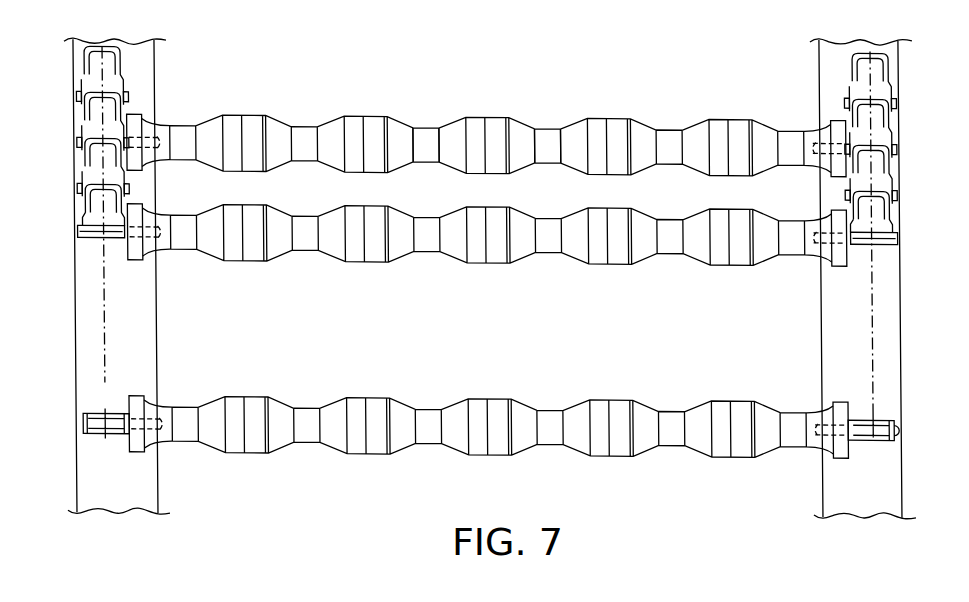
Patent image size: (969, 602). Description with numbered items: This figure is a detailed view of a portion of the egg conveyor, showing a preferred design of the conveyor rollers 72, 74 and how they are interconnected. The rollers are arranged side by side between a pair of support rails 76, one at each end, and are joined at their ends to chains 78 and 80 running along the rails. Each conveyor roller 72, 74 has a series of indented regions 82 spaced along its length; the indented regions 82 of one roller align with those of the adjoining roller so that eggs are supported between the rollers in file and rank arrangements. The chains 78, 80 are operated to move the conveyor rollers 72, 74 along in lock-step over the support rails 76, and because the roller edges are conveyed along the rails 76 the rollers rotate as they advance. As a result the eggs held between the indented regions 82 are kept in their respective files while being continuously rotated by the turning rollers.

The conveyor roller 72 is at (604, 118).
The conveyor roller 74 is at (610, 263).
The support rails 76 is at (133, 329).
The chain 78 is at (852, 59).
The chain 80 is at (122, 73).
The indented regions 82 is at (418, 128).